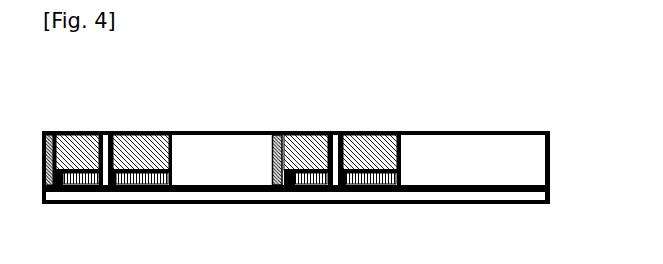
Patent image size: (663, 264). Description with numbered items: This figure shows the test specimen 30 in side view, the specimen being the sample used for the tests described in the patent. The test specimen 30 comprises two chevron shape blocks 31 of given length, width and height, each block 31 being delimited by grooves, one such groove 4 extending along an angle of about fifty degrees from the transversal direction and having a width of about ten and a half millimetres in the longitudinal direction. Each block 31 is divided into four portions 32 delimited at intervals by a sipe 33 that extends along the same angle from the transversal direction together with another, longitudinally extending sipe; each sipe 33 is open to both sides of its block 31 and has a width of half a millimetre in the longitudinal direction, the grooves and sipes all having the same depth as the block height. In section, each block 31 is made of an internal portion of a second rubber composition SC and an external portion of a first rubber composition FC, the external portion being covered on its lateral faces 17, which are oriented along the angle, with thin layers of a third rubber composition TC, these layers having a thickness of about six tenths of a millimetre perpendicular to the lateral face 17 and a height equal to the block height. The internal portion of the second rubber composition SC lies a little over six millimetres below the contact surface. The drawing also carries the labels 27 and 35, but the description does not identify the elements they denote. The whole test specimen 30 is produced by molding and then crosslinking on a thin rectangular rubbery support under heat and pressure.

The groove 4 is at (221, 161).
The lateral face 17 is at (275, 132).
The end separator 27 is at (48, 132).
The test specimen 30 is at (296, 142).
The chevron shape block 31 is at (440, 132).
The portion 32 is at (302, 132).
The sipe 33 is at (107, 139).
The base plate 35 is at (488, 192).
The third rubber composition TC is at (282, 150).
The first rubber composition FC is at (305, 150).
The second rubber composition SC is at (356, 148).